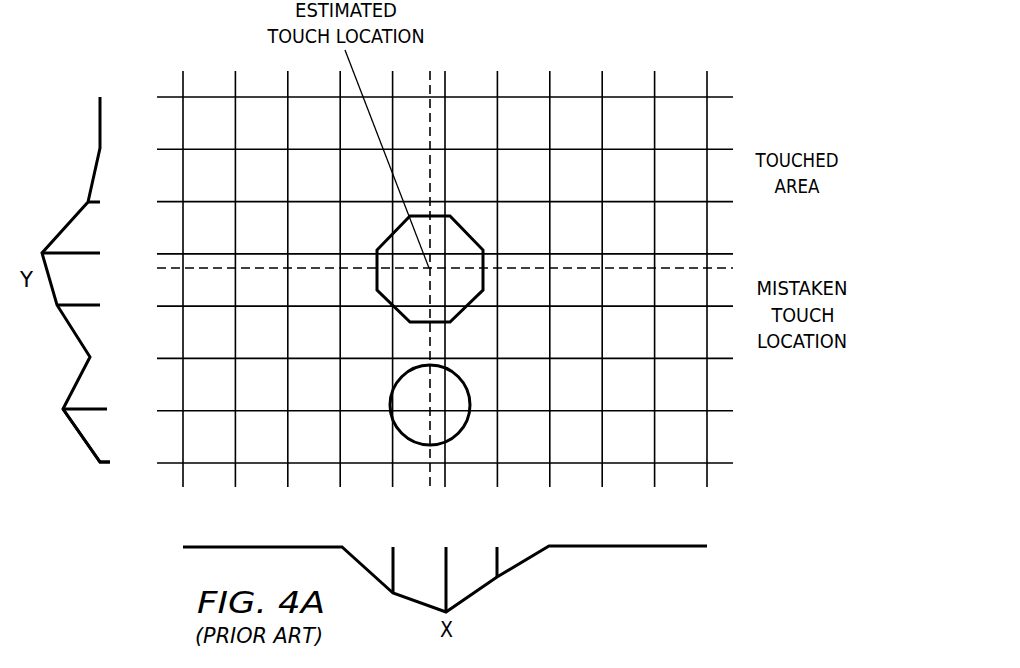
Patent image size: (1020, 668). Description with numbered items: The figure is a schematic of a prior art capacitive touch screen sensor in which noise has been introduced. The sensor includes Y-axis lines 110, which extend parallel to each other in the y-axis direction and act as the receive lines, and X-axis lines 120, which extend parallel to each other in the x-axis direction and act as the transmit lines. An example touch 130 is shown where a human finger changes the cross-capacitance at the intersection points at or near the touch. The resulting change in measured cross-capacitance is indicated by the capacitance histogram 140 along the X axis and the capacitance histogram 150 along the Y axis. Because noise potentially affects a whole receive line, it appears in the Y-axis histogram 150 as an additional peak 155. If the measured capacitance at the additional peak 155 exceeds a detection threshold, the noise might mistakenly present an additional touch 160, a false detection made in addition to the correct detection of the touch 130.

The Y-axis lines 110 is at (723, 513).
The X-axis lines 120 is at (137, 481).
The touch 130 is at (470, 232).
The capacitance histogram 140 is at (483, 588).
The capacitance histogram 150 is at (72, 333).
The additional peak 155 is at (80, 440).
The additional touch 160 is at (469, 397).